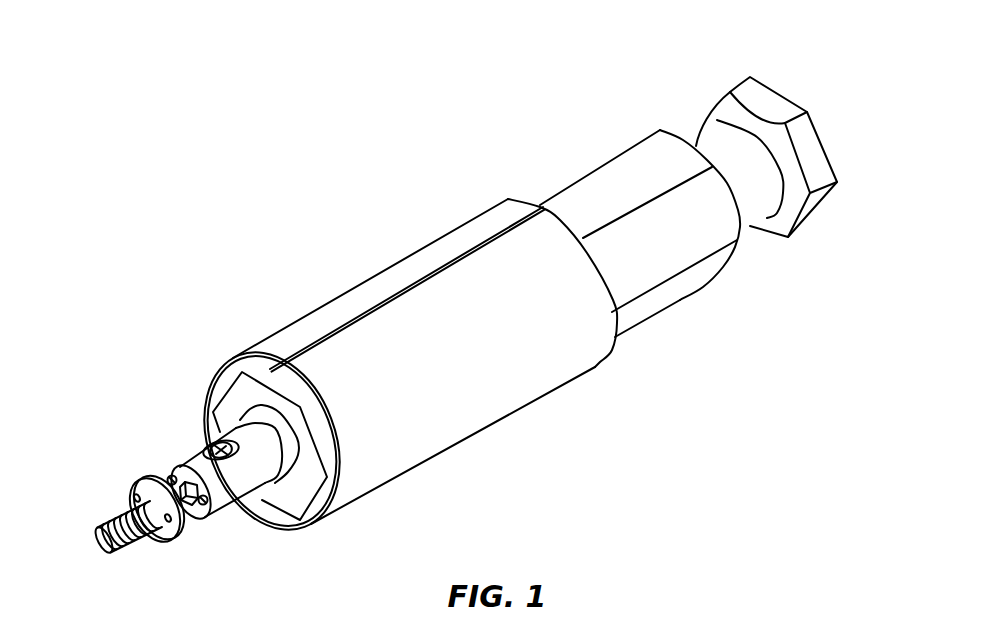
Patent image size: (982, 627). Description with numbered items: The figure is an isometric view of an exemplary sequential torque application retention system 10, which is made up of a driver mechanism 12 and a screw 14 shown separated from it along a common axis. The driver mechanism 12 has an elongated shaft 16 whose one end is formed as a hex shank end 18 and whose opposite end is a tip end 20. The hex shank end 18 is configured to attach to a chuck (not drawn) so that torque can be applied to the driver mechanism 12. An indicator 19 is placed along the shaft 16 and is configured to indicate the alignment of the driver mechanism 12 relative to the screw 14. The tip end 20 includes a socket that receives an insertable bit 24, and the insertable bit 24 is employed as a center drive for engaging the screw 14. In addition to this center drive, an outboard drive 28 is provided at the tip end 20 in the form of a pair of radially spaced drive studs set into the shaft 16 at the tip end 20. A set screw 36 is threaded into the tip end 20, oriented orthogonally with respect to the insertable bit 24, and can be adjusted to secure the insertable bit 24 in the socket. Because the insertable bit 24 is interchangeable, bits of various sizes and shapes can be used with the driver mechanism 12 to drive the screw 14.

The sequential torque application retention system 10 is at (288, 161).
The driver mechanism 12 is at (512, 432).
The screw 14 is at (97, 535).
The shaft 16 is at (345, 293).
The hex shank end 18 is at (676, 106).
The indicator 19 is at (448, 262).
The tip end 20 is at (126, 386).
The insertable bit 24 is at (186, 507).
The outboard drive 28 is at (168, 477).
The set screw 36 is at (214, 445).